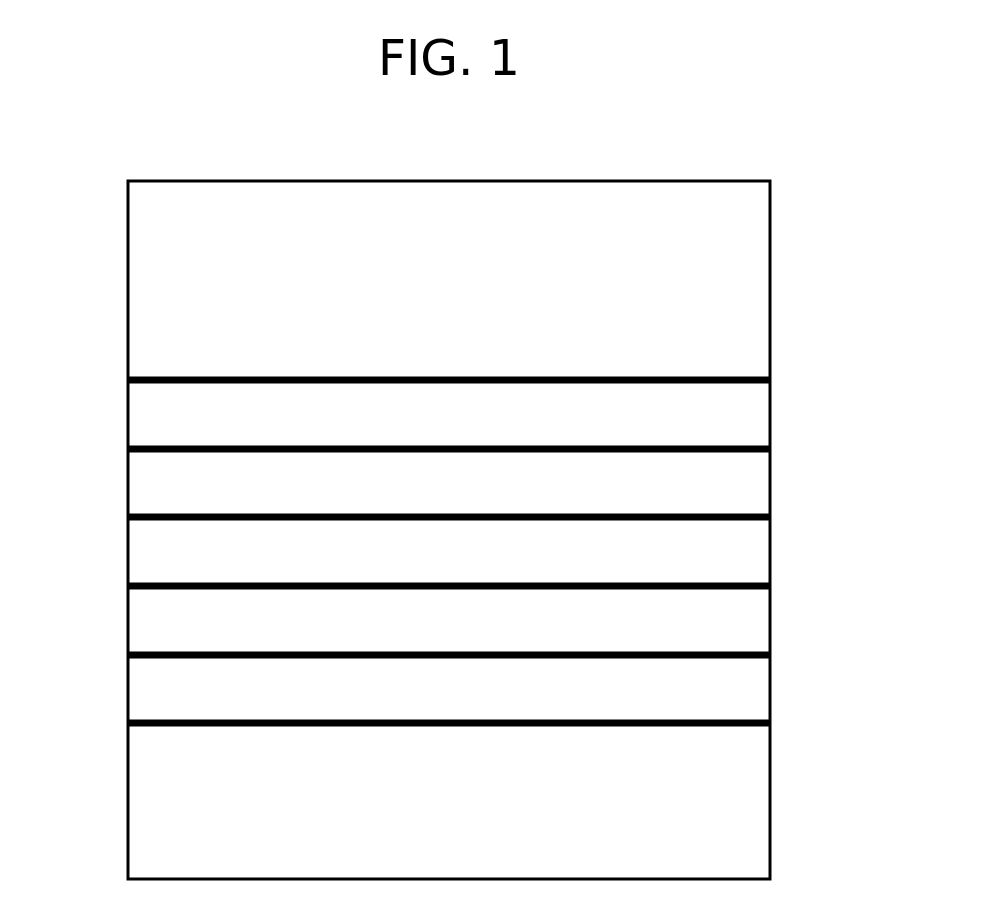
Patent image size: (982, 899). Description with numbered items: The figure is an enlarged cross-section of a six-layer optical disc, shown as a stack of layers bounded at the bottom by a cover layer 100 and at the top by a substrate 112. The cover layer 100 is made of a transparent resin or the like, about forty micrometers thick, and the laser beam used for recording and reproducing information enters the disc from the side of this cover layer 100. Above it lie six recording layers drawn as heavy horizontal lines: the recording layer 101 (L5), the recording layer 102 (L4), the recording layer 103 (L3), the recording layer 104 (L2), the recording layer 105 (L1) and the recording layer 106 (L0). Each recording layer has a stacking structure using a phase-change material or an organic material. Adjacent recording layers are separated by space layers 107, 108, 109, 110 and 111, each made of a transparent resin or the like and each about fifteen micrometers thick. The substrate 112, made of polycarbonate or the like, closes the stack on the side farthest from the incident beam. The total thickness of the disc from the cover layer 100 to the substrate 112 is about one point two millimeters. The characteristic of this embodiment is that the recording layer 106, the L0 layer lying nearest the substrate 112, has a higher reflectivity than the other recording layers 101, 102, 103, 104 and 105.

The cover layer 100 is at (770, 805).
The recording layer L5 101 is at (146, 730).
The recording layer L4 102 is at (146, 662).
The recording layer L3 103 is at (146, 593).
The recording layer L2 104 is at (146, 524).
The recording layer L1 105 is at (146, 456).
The recording layer L0 106 is at (146, 387).
The space layer 107 is at (770, 683).
The space layer 108 is at (770, 617).
The space layer 109 is at (770, 557).
The space layer 110 is at (770, 478).
The space layer 111 is at (770, 410).
The substrate 112 is at (770, 257).